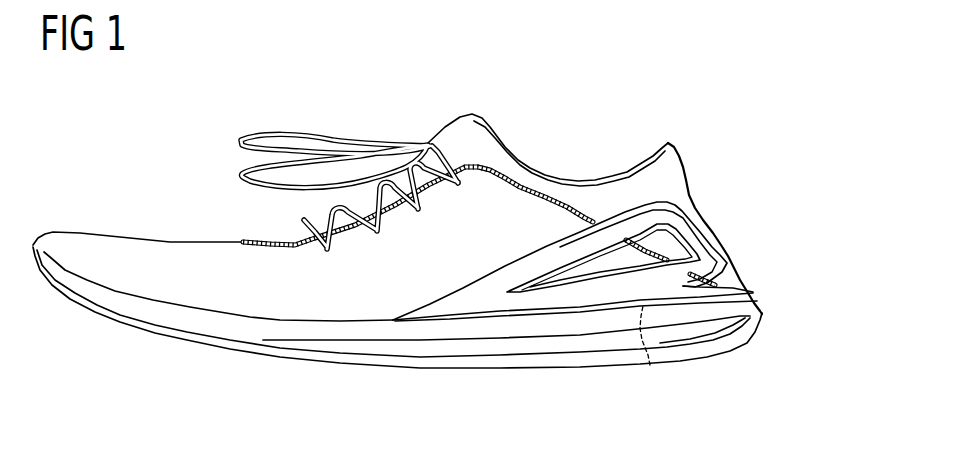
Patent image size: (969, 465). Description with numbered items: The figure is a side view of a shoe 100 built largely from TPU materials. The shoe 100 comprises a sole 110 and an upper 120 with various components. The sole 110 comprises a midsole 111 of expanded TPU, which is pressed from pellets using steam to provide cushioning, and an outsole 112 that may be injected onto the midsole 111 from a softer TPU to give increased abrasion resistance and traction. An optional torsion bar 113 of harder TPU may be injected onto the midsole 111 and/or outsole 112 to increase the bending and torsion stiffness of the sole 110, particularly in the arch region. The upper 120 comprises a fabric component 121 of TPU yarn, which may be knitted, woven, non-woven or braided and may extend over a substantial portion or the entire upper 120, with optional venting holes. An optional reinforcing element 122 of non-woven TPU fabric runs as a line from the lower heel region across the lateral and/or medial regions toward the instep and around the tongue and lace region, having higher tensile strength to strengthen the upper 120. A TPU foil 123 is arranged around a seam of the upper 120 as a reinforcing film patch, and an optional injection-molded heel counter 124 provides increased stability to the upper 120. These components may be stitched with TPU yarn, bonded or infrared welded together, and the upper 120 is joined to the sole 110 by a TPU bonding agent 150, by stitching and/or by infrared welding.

The shoe 100 is at (86, 199).
The sole 110 is at (765, 331).
The midsole 111 is at (731, 322).
The outsole 112 is at (291, 357).
The torsion bar 113 is at (560, 372).
The upper 120 is at (750, 186).
The fabric component 121 is at (168, 257).
The reinforcing element 122 is at (567, 207).
The TPU foil 123 is at (527, 158).
The heel counter 124 is at (742, 291).
The TPU bonding agent 150 is at (650, 365).